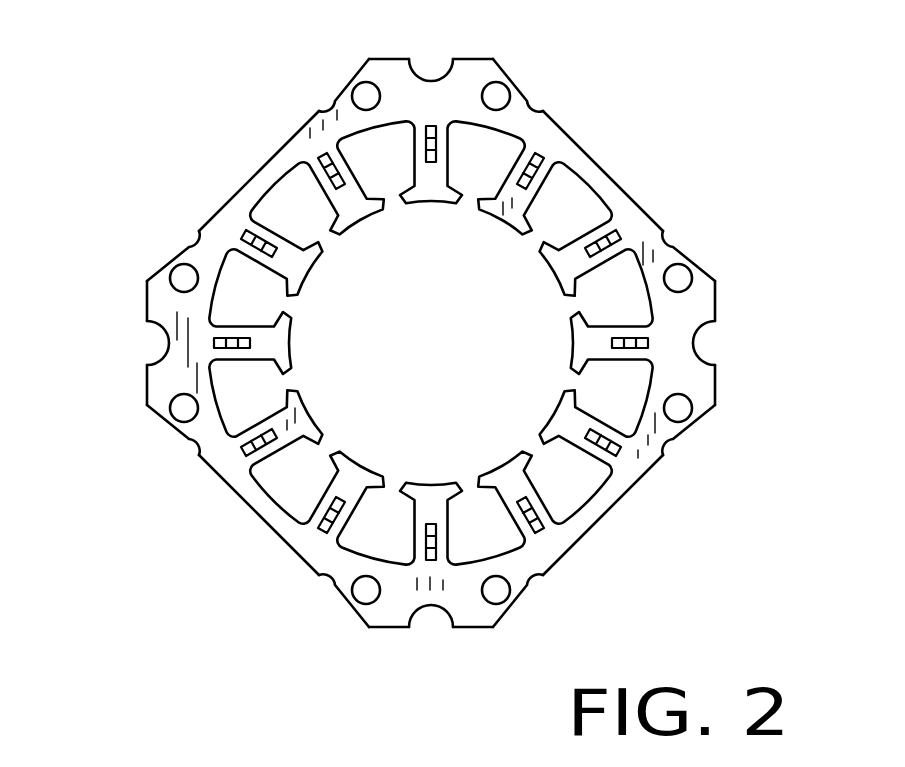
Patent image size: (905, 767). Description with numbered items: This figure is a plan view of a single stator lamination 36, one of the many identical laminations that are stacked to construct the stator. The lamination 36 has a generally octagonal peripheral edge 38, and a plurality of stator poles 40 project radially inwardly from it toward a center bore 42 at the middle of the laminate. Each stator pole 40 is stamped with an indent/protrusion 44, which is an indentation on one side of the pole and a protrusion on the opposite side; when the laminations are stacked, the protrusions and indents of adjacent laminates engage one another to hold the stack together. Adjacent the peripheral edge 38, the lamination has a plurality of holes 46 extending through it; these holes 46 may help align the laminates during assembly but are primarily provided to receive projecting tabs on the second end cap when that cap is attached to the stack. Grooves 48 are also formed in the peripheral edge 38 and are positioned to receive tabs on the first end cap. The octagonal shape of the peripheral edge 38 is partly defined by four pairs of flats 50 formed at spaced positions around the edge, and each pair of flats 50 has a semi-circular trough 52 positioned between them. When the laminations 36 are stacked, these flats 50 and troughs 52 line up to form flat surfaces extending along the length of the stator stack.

The stator lamination 36 is at (428, 352).
The peripheral edge 38 is at (600, 166).
The stator pole 40 is at (349, 203).
The center bore 42 is at (468, 306).
The indent/protrusion 44 is at (257, 444).
The hole 46 is at (493, 98).
The groove 48 is at (332, 100).
The flat 50 is at (390, 58).
The semi-circular trough 52 is at (432, 80).